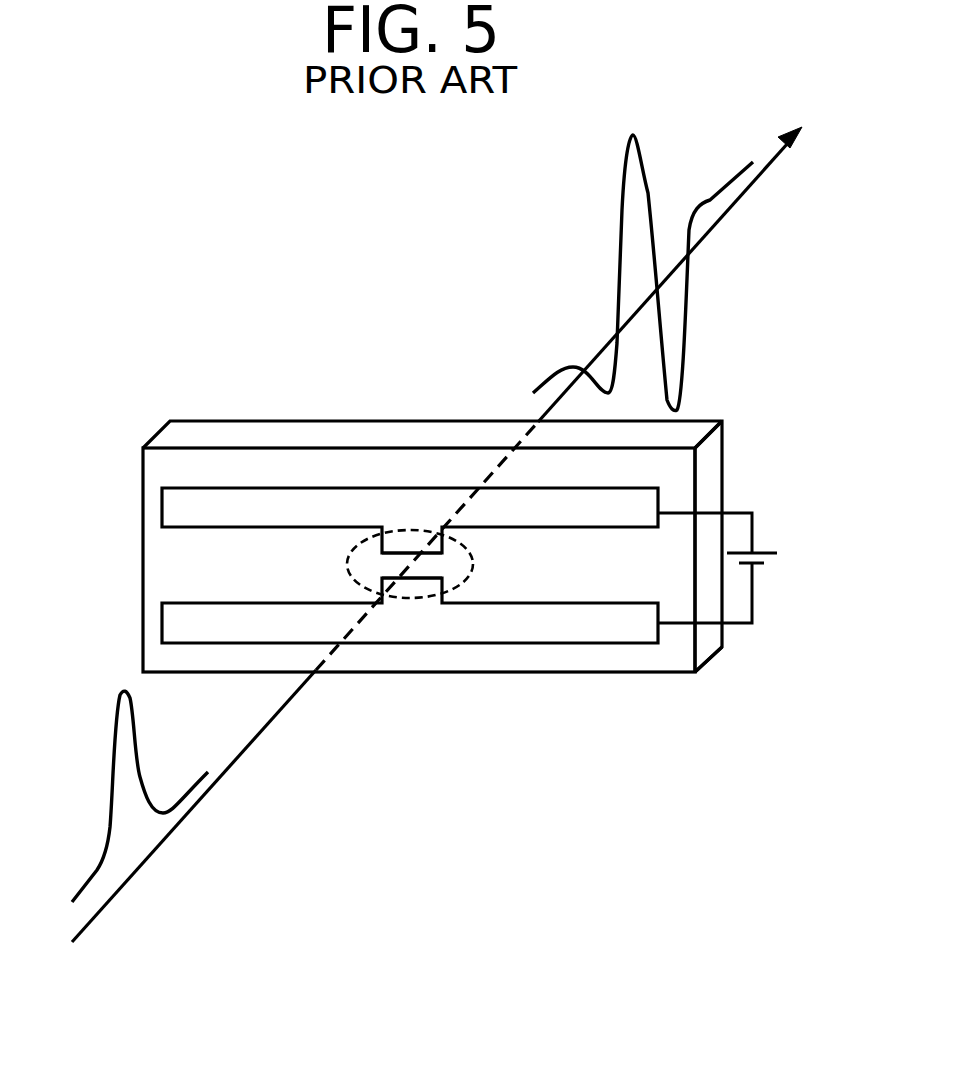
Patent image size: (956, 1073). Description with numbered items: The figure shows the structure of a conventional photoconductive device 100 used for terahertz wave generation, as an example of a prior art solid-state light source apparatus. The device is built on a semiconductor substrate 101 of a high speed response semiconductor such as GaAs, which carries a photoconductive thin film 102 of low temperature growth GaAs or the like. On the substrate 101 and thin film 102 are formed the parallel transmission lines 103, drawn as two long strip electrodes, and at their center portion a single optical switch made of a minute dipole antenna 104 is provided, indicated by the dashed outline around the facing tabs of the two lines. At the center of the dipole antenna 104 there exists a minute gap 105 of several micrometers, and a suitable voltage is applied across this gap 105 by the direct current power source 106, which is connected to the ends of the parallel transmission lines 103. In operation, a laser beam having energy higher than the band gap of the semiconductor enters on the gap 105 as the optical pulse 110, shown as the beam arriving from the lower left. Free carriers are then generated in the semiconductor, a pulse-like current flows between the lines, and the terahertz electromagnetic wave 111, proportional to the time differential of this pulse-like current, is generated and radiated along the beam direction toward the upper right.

The photoconductive device 100 is at (217, 421).
The semiconductor substrate 101 is at (710, 468).
The photoconductive thin film 102 is at (492, 660).
The parallel transmission lines 103 is at (162, 510).
The dipole antenna 104 is at (473, 564).
The gap 105 is at (402, 562).
The direct current power source 106 is at (770, 563).
The optical pulse 110 is at (146, 796).
The terahertz electromagnetic wave 111 is at (646, 273).